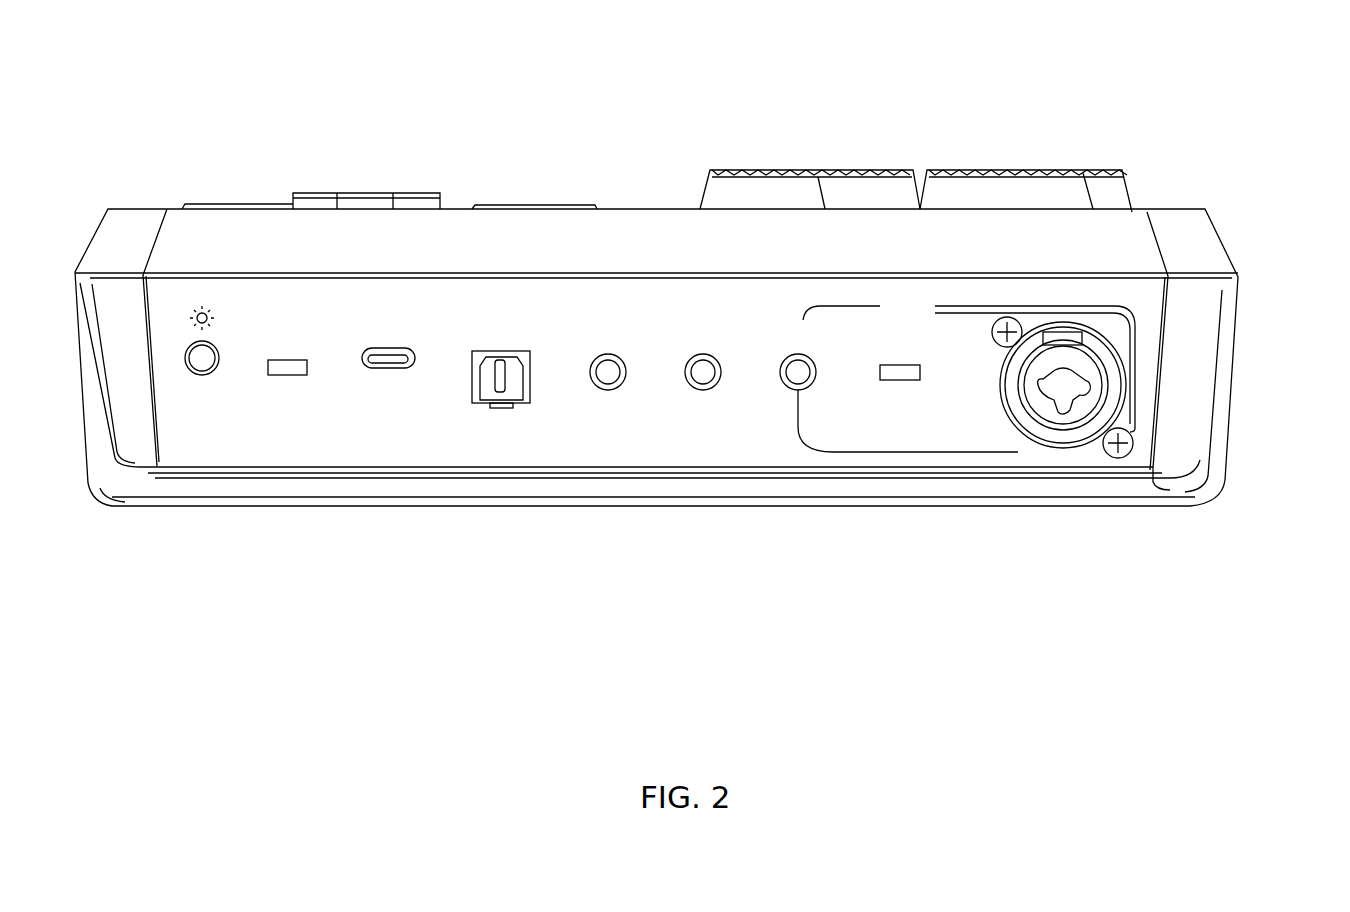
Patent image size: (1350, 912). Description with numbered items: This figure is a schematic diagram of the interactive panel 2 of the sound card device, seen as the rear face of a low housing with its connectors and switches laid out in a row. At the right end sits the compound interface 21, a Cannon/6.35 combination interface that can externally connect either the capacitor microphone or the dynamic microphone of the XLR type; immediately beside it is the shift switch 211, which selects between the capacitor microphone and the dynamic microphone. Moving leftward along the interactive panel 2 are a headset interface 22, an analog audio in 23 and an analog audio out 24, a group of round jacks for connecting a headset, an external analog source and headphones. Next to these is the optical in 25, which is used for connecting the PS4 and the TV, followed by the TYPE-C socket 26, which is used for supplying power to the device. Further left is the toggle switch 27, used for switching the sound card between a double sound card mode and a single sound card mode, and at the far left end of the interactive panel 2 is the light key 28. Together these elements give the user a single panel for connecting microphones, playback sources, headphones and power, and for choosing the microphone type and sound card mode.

The interactive panel 2 is at (1133, 300).
The compound interface 21 is at (1080, 405).
The shift switch 211 is at (898, 380).
The headset interface 22 is at (800, 390).
The analog audio in 23 is at (703, 390).
The analog audio out 24 is at (608, 390).
The optical in 25 is at (500, 403).
The TYPE-C socket 26 is at (380, 375).
The toggle switch 27 is at (283, 403).
The light key 28 is at (192, 383).